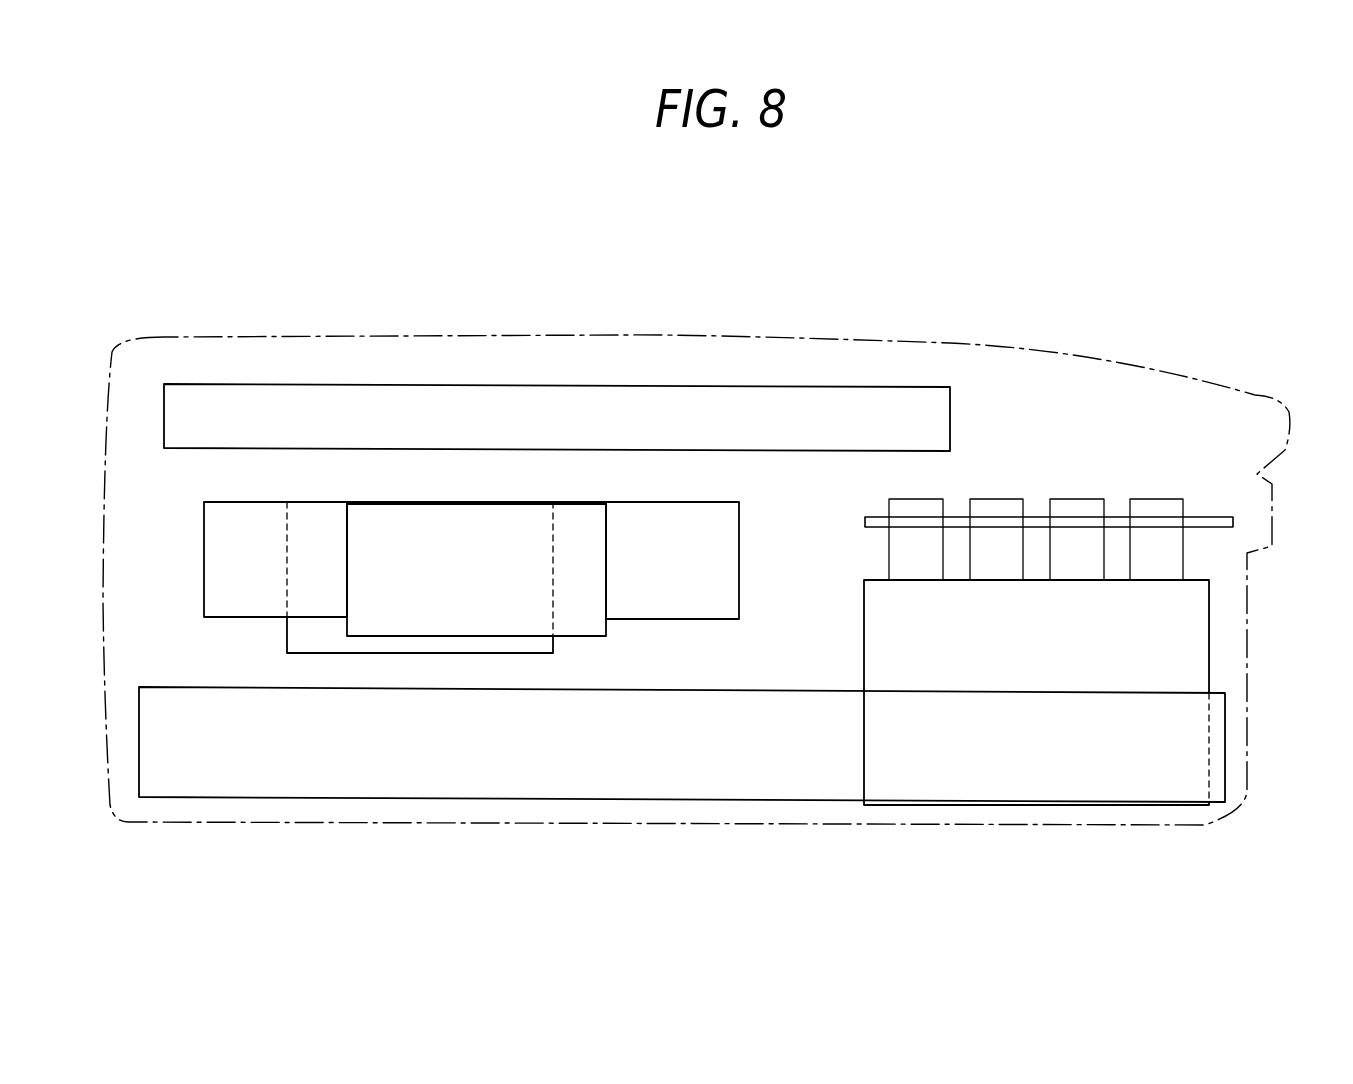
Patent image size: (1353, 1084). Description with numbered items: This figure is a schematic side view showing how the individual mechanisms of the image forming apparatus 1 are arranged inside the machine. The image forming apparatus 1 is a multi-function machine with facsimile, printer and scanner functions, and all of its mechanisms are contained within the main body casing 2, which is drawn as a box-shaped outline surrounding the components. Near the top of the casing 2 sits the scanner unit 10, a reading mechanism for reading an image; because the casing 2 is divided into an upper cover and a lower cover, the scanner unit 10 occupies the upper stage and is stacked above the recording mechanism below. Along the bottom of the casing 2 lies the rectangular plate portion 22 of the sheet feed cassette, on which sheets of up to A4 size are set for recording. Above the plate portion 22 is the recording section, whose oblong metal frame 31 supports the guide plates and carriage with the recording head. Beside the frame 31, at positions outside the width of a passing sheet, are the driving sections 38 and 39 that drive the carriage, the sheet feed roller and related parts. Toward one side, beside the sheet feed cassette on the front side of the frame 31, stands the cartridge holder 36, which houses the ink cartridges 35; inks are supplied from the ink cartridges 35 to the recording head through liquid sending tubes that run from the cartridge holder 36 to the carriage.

The image forming apparatus 1 is at (1052, 270).
The main body casing 2 is at (287, 337).
The scanner unit 10 is at (590, 397).
The plate portion 22 is at (307, 750).
The frame 31 is at (665, 588).
The ink cartridges 35 is at (1162, 557).
The cartridge holder 36 is at (1182, 632).
The driving section 38 is at (510, 615).
The driving section 39 is at (453, 635).